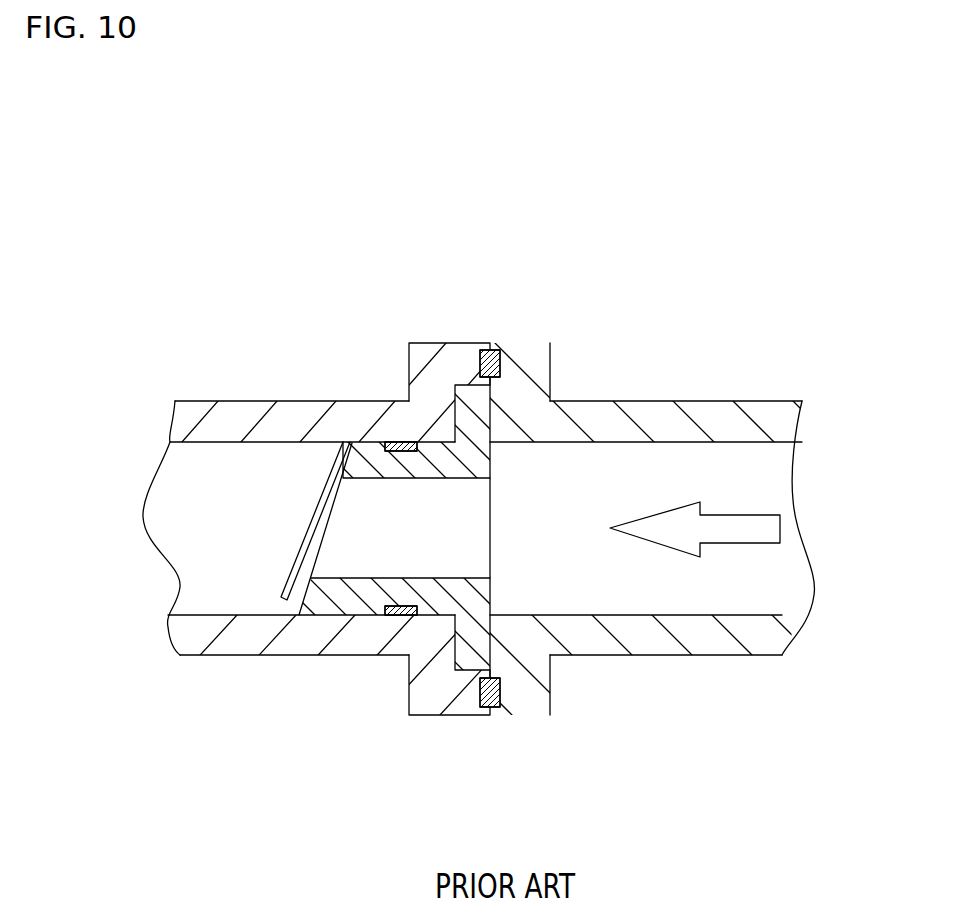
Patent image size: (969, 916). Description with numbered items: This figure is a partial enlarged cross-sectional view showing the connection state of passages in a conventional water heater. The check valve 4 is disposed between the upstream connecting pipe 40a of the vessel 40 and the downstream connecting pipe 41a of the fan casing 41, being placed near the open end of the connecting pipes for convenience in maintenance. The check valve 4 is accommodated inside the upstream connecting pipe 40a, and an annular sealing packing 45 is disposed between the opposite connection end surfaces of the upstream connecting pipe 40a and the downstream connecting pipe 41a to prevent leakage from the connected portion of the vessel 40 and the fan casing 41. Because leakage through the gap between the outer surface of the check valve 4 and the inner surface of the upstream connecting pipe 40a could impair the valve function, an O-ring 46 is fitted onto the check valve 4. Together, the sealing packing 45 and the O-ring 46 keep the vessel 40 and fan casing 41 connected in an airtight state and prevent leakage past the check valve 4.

The check valve 4 is at (360, 615).
The vessel 40 is at (123, 537).
The upstream connecting pipe 40a is at (277, 401).
The fan casing 41 is at (875, 528).
The downstream connecting pipe 41a is at (650, 401).
The annular sealing packing 45 is at (497, 362).
The O-ring 46 is at (398, 442).